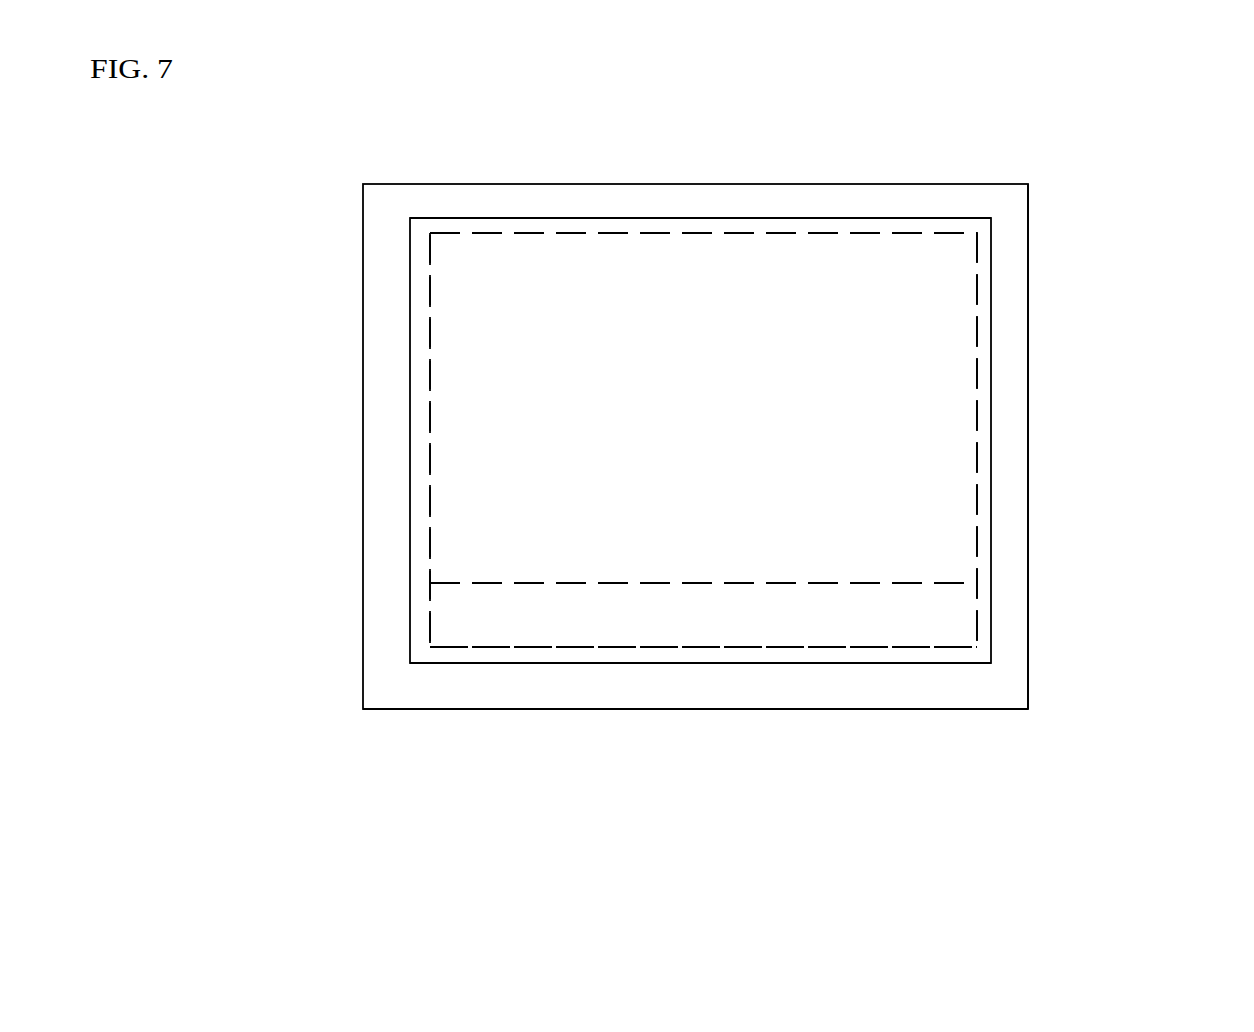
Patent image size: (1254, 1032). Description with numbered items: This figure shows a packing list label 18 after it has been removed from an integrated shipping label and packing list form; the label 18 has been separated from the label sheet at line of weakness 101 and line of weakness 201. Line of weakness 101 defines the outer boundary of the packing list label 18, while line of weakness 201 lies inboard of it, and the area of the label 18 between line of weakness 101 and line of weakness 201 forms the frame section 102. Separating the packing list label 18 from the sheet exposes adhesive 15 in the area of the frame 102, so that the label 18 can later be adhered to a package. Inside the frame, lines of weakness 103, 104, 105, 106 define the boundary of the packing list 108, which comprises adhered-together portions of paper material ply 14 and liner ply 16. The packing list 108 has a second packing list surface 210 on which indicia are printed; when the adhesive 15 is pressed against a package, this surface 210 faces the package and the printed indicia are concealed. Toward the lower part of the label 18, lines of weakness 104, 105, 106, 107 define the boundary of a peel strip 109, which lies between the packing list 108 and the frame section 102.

The paper material ply 14 is at (708, 198).
The adhesive 15 is at (947, 688).
The liner ply 16 is at (495, 364).
The packing list label 18 is at (1029, 213).
The line of weakness 101 is at (1030, 658).
The frame section 102 is at (900, 200).
The line of weakness 103 is at (684, 234).
The line of weakness 104 is at (972, 415).
The line of weakness 105 is at (435, 427).
The line of weakness 106 is at (607, 580).
The line of weakness 107 is at (530, 647).
The packing list 108 is at (542, 287).
The peel strip 109 is at (607, 625).
The line of weakness 201 is at (785, 665).
The second packing list surface 210 is at (937, 377).